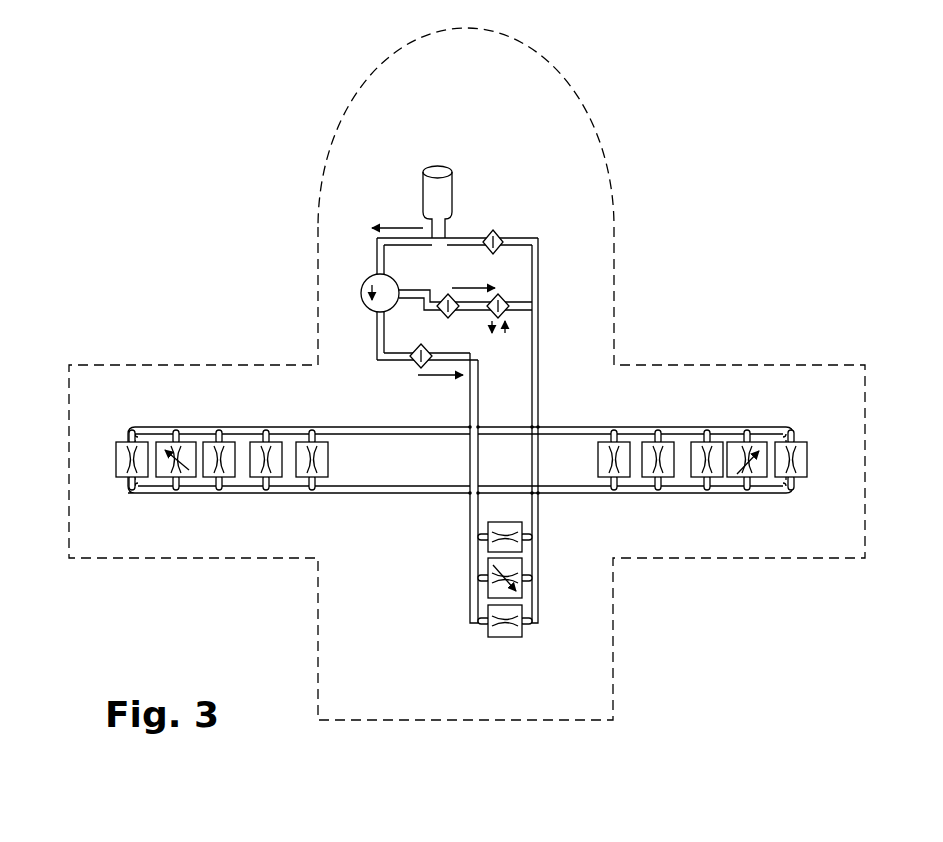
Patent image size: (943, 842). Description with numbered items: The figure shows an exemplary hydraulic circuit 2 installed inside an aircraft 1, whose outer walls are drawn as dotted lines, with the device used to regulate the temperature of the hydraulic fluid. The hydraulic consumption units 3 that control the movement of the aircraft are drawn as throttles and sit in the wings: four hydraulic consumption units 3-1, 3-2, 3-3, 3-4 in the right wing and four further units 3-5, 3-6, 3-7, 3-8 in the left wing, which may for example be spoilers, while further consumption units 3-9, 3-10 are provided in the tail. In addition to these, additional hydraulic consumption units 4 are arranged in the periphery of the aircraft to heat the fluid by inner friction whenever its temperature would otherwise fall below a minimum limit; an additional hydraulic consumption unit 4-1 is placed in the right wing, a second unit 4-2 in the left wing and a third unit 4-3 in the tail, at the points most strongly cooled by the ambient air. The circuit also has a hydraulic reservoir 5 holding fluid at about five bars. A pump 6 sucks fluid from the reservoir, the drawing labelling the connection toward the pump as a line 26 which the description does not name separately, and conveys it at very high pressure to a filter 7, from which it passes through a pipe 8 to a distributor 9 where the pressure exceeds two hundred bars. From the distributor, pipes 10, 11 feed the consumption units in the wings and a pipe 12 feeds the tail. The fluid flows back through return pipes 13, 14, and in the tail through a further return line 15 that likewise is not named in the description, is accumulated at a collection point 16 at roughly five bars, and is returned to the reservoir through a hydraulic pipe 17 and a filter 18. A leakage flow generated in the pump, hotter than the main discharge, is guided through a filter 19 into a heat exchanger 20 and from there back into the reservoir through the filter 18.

The aircraft 1 is at (575, 90).
The hydraulic circuit 2 is at (490, 152).
The hydraulic consumption units 3 is at (120, 410).
The additional hydraulic consumption units 4 is at (433, 612).
The hydraulic reservoir 5 is at (432, 200).
The pump 6 is at (362, 287).
The filter 7 is at (411, 367).
The pipe 8 is at (478, 395).
The distributor 9 is at (470, 425).
The pipe 10 is at (355, 430).
The pipe 11 is at (562, 428).
The pipe 12 is at (470, 508).
The return pipe 13 is at (380, 496).
The return pipe 14 is at (578, 496).
The tail return line 15 is at (540, 553).
The collection point 16 is at (542, 482).
The hydraulic pipe 17 is at (540, 356).
The filter 18 is at (498, 232).
The filter 19 is at (440, 314).
The heat exchanger 20 is at (522, 300).
The pump suction line 26 is at (378, 332).
The hydraulic consumption unit 3-1 is at (623, 477).
The hydraulic consumption unit 3-2 is at (668, 477).
The hydraulic consumption unit 3-3 is at (717, 477).
The hydraulic consumption unit 3-4 is at (800, 477).
The hydraulic consumption unit 3-5 is at (322, 477).
The hydraulic consumption unit 3-6 is at (256, 477).
The hydraulic consumption unit 3-7 is at (205, 477).
The hydraulic consumption unit 3-8 is at (119, 477).
The mechanical consumption unit 3-9 is at (490, 545).
The mechanical consumption unit 3-10 is at (503, 640).
The additional hydraulic consumption unit 4-1 is at (738, 445).
The additional hydraulic consumption unit 4-2 is at (188, 445).
The additional hydraulic consumption unit 4-3 is at (525, 583).